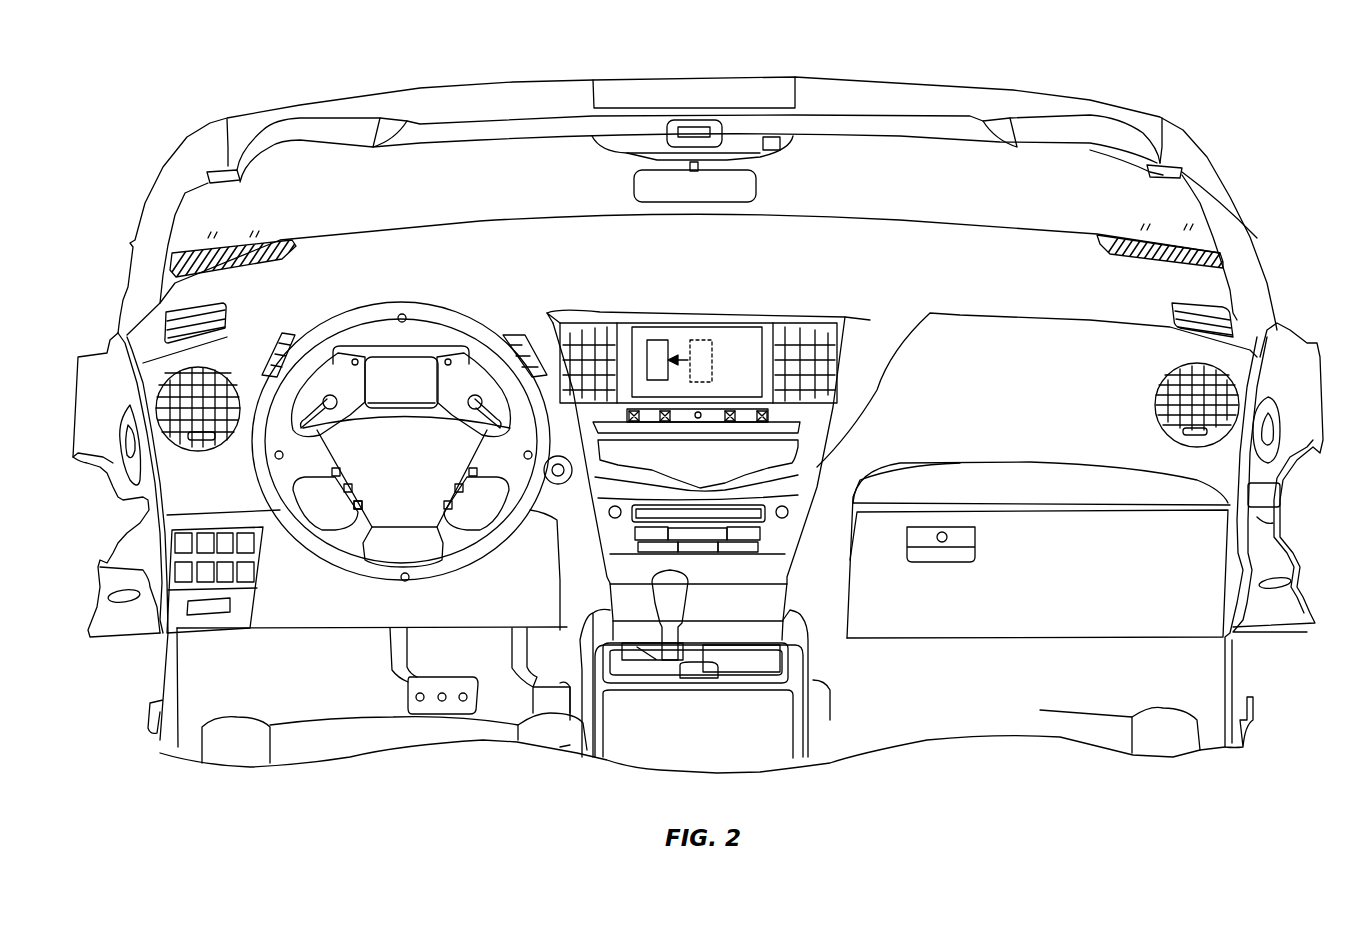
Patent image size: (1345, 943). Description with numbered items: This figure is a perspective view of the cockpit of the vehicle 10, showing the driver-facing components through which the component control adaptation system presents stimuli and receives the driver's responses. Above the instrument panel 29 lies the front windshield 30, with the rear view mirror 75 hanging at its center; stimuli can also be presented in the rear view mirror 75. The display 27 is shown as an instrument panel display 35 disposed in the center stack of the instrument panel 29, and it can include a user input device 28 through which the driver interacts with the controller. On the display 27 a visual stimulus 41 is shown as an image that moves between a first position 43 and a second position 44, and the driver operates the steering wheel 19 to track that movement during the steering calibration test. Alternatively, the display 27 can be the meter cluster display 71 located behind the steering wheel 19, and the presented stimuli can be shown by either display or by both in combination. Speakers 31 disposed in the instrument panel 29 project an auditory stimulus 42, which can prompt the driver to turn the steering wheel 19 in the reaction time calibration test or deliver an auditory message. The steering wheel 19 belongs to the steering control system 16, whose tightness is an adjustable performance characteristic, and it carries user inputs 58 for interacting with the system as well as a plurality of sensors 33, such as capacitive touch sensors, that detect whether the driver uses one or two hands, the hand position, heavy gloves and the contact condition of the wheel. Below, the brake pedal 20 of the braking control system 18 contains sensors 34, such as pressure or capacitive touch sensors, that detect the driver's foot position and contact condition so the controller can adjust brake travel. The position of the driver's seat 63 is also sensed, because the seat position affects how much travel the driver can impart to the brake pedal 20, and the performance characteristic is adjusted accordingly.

The vehicle 10 is at (1236, 110).
The front windshield 30 is at (493, 172).
The rear view mirror 75 is at (758, 187).
The auditory stimulus 42 is at (1196, 232).
The instrument panel 29 is at (1197, 288).
The speakers 31 is at (122, 310).
The steering wheel 19 is at (323, 333).
The steering control system 16 is at (462, 311).
The meter cluster display 71 is at (418, 342).
The display 27 is at (390, 344).
The second position 44 is at (657, 338).
The visual stimulus 41 is at (702, 338).
The first position 43 is at (715, 342).
The instrument panel display 35 is at (752, 340).
The user input device 28 is at (773, 415).
The user inputs 58 is at (357, 512).
The sensors 33 is at (405, 582).
The driver's seat 63 is at (240, 717).
The braking control system 18 is at (397, 697).
The brake pedal 20 is at (437, 677).
The sensors 34 is at (442, 702).